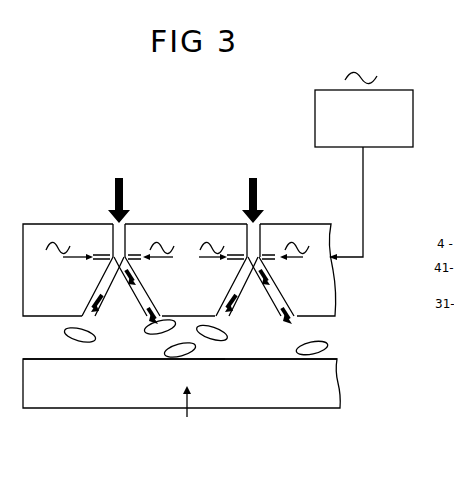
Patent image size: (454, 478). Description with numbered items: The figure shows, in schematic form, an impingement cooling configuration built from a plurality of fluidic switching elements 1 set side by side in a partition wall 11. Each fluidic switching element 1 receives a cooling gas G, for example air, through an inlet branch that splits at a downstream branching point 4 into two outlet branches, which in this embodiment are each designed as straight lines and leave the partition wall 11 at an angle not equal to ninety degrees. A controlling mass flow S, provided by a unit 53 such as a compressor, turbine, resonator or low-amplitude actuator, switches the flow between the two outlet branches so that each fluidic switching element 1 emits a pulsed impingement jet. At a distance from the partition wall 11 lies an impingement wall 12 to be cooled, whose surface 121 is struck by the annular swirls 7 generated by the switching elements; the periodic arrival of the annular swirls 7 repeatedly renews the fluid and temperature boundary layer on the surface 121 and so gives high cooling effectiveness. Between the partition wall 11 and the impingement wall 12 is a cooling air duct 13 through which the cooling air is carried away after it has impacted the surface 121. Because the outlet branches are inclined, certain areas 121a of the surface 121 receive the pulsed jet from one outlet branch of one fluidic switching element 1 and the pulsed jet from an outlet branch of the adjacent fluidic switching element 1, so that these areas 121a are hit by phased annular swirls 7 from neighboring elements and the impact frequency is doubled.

The fluidic switching element 1 is at (179, 241).
The partition wall 11 is at (47, 230).
The branching point 4 is at (117, 258).
The unit 53 is at (413, 123).
The annular swirl 7 is at (147, 330).
The cooling air duct 13 is at (217, 338).
The impingement wall 12 is at (202, 390).
The surface 121 is at (328, 356).
The area 121a is at (205, 351).